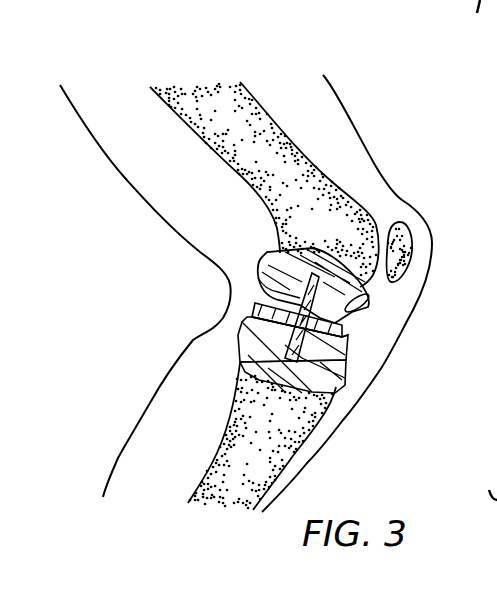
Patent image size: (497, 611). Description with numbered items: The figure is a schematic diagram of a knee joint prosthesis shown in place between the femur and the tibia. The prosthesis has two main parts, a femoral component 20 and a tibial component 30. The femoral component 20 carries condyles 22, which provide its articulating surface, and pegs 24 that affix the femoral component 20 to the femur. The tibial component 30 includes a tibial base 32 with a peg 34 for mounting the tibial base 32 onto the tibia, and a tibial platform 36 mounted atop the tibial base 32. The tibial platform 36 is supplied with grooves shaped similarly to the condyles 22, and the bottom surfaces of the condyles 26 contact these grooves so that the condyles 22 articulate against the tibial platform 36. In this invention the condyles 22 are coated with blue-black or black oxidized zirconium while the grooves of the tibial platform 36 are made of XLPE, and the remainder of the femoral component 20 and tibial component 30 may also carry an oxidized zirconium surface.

The femoral component 20 is at (319, 320).
The condyles 22 is at (262, 287).
The pegs 24 is at (270, 252).
The bottom surfaces of the condyles 26 is at (347, 330).
The tibial component 30 is at (310, 347).
The tibial base 32 is at (240, 317).
The peg 34 is at (242, 355).
The tibial platform 36 is at (362, 332).